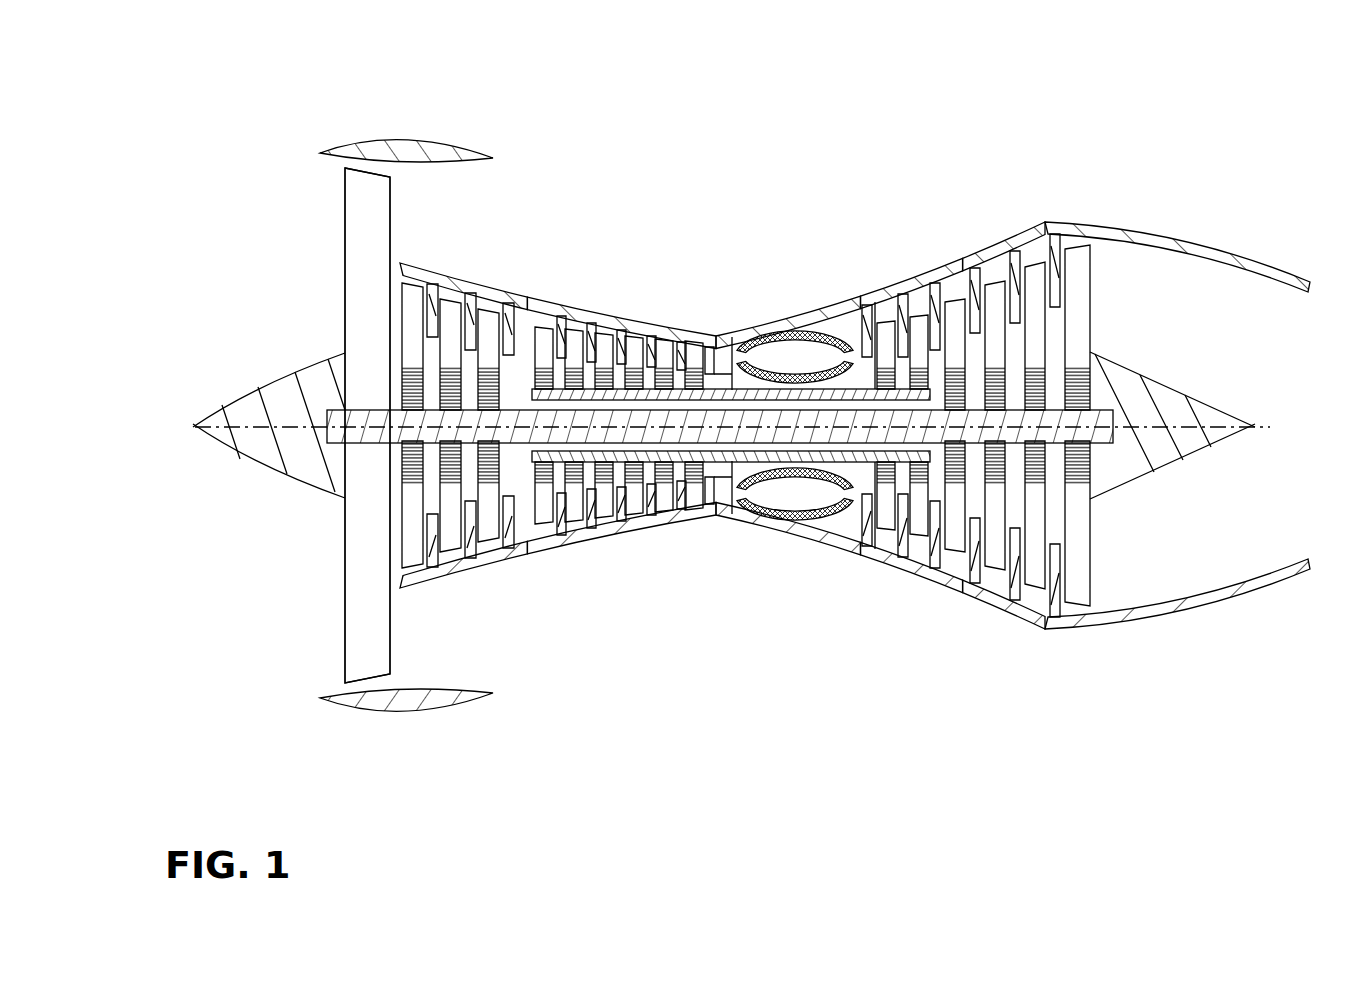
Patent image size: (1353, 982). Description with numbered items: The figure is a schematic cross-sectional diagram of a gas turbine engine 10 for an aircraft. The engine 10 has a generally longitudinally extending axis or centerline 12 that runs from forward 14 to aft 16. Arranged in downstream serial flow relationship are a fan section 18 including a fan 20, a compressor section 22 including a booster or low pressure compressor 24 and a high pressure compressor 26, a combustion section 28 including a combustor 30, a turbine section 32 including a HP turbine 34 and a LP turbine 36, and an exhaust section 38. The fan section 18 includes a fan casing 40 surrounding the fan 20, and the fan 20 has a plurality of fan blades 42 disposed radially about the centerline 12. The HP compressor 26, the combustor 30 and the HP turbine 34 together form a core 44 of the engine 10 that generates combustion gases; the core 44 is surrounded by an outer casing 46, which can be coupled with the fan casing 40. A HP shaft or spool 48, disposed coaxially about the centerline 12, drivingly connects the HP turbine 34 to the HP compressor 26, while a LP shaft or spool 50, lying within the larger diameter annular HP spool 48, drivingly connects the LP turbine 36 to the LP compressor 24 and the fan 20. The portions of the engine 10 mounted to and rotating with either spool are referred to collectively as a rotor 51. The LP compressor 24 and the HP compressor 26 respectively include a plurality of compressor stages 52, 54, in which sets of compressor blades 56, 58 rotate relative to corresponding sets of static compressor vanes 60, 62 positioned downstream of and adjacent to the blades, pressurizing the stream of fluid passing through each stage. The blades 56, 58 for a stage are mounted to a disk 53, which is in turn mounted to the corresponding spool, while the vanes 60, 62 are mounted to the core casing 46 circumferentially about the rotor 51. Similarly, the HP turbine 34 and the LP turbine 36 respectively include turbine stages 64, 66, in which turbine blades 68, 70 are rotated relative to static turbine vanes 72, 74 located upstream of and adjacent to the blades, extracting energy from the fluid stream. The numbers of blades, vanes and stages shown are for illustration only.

The gas turbine engine 10 is at (238, 76).
The centerline 12 is at (243, 400).
The forward 14 is at (190, 427).
The aft 16 is at (1272, 427).
The fan section 18 is at (392, 750).
The fan 20 is at (340, 226).
The compressor section 22 is at (395, 750).
The low pressure compressor 24 is at (523, 566).
The high pressure compressor 26 is at (673, 537).
The combustion section 28 is at (737, 750).
The combustor 30 is at (846, 328).
The turbine section 32 is at (1075, 750).
The HP turbine 34 is at (862, 557).
The LP turbine 36 is at (982, 602).
The exhaust section 38 is at (1315, 750).
The fan casing 40 is at (412, 138).
The fan blades 42 is at (357, 628).
The core 44 is at (930, 627).
The outer casing 46 is at (777, 318).
The HP spool 48 is at (732, 336).
The LP spool 50 is at (517, 409).
The rotor 51 is at (656, 405).
The compressor stages 52 is at (399, 256).
The disk 53 is at (990, 380).
The compressor stages 54 is at (545, 298).
The compressor blades 56 is at (413, 288).
The compressor blades 58 is at (548, 332).
The static compressor vanes 60 is at (433, 294).
The static compressor vanes 62 is at (563, 357).
The turbine stages 64 is at (890, 283).
The turbine stages 66 is at (1012, 238).
The turbine blades 68 is at (923, 330).
The turbine blades 70 is at (1033, 283).
The static turbine vanes 72 is at (897, 296).
The static turbine vanes 74 is at (1017, 266).